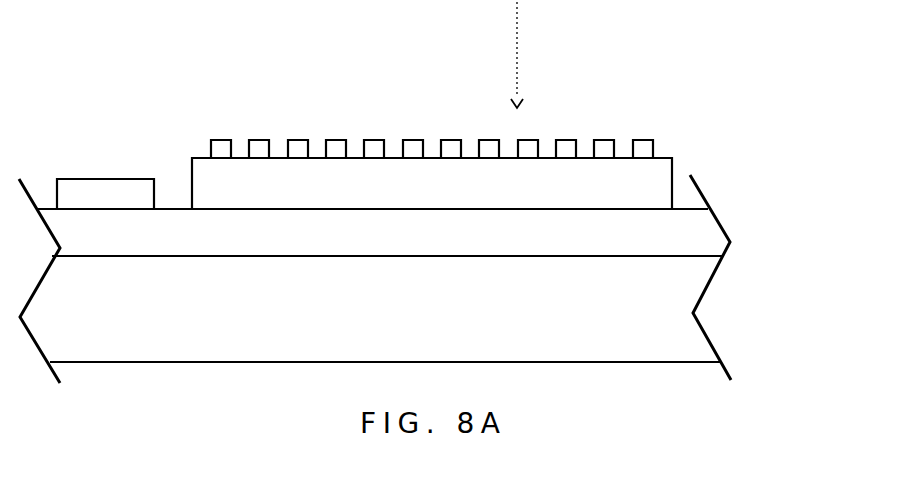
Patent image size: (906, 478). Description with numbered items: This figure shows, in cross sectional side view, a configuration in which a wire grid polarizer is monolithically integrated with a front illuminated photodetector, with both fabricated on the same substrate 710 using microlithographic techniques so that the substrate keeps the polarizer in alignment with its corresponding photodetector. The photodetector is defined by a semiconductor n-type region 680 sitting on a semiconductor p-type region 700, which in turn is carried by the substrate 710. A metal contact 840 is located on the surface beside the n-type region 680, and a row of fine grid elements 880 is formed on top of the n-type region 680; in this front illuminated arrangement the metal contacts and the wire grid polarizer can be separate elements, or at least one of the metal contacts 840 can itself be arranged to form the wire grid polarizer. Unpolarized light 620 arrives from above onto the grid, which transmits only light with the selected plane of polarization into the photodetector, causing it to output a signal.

The unpolarized light 620 is at (545, 55).
The semiconductor n-type region 680 is at (573, 179).
The semiconductor p-type region 700 is at (702, 232).
The substrate 710 is at (385, 327).
The metal contacts 840 is at (335, 152).
The electrode fingers 880 is at (450, 148).